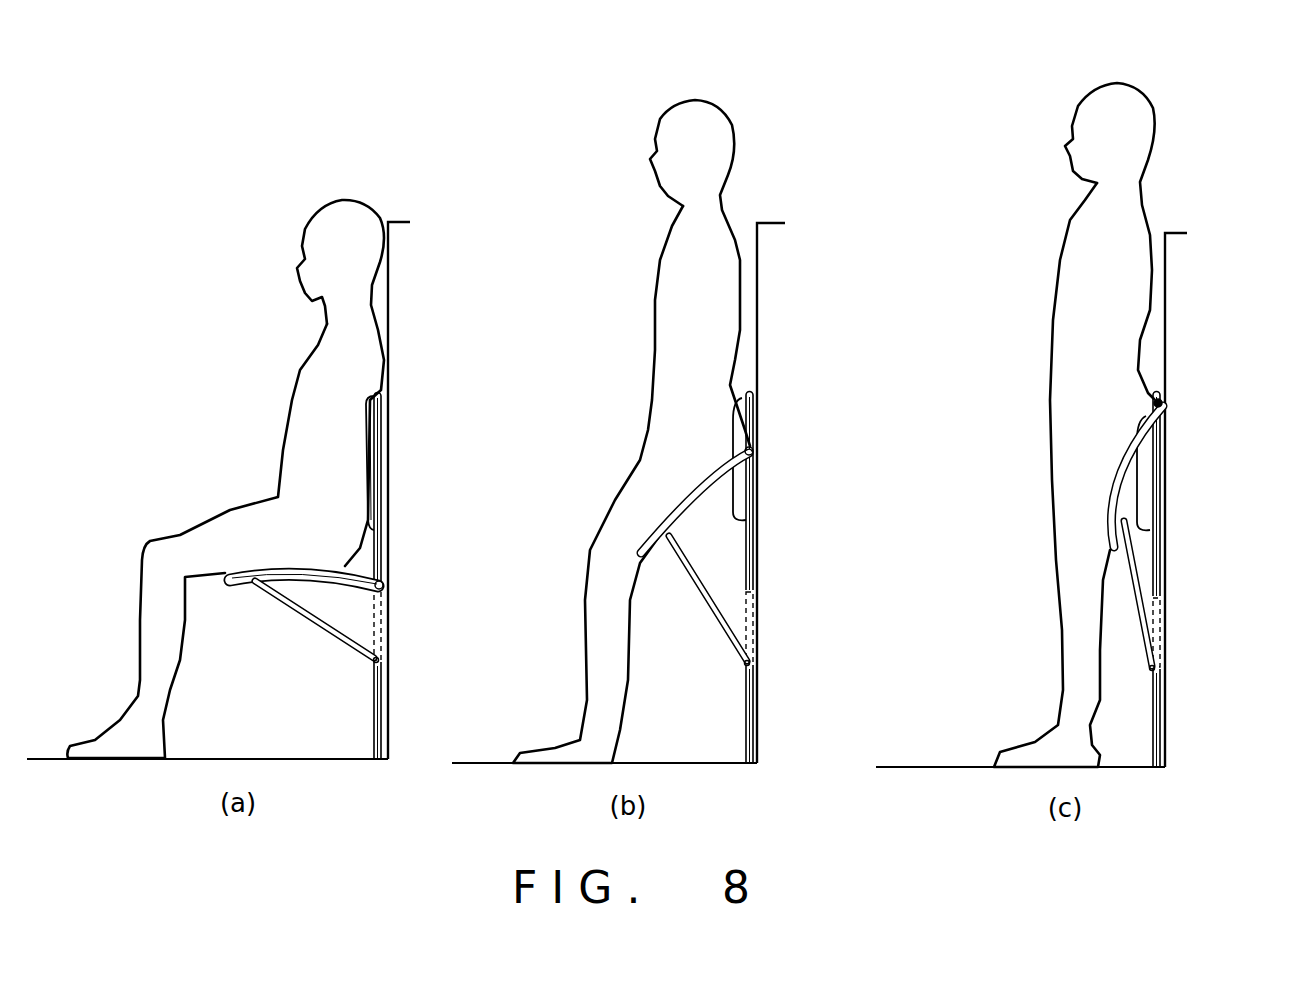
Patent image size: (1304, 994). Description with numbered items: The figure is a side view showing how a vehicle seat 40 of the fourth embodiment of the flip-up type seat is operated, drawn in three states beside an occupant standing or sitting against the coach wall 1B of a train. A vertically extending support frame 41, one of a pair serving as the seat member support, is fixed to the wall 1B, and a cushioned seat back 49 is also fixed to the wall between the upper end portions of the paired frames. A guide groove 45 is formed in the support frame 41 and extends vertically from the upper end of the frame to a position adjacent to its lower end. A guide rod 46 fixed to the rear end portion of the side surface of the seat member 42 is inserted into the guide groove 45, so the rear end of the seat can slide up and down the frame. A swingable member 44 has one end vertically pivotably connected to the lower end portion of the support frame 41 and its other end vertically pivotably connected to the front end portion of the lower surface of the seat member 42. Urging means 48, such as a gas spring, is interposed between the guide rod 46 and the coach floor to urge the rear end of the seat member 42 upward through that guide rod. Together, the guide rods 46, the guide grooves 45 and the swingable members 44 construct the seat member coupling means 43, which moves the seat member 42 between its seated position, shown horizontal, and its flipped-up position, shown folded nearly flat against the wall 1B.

The wall 1B is at (392, 318).
The vehicle seat 40 is at (290, 562).
The support frame 41 is at (386, 615).
The seat member 42 is at (268, 570).
The seat member coupling means 43 is at (325, 638).
The swingable member 44 is at (293, 609).
The guide groove 45 is at (383, 476).
The guide rod 46 is at (384, 582).
The urging means 48 is at (381, 702).
The cushioned seat back 49 is at (368, 452).